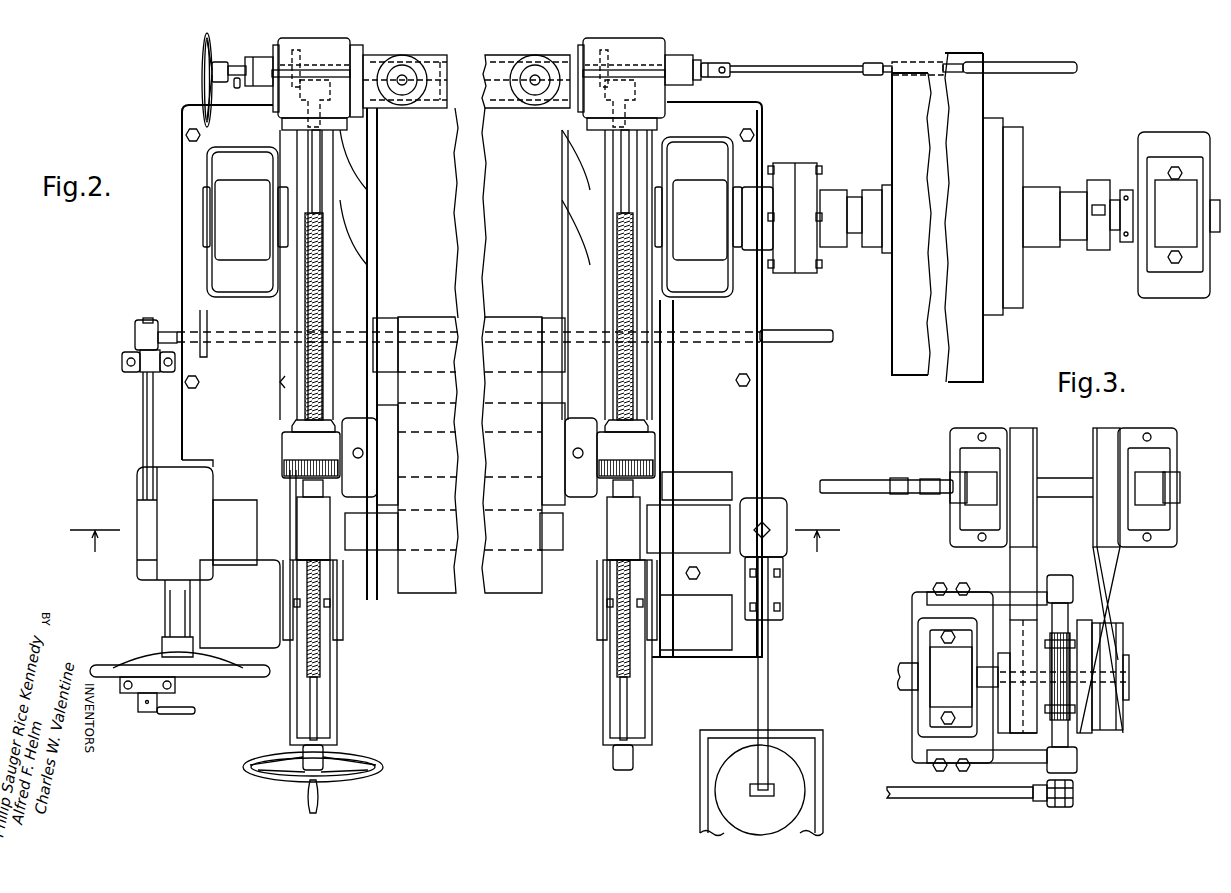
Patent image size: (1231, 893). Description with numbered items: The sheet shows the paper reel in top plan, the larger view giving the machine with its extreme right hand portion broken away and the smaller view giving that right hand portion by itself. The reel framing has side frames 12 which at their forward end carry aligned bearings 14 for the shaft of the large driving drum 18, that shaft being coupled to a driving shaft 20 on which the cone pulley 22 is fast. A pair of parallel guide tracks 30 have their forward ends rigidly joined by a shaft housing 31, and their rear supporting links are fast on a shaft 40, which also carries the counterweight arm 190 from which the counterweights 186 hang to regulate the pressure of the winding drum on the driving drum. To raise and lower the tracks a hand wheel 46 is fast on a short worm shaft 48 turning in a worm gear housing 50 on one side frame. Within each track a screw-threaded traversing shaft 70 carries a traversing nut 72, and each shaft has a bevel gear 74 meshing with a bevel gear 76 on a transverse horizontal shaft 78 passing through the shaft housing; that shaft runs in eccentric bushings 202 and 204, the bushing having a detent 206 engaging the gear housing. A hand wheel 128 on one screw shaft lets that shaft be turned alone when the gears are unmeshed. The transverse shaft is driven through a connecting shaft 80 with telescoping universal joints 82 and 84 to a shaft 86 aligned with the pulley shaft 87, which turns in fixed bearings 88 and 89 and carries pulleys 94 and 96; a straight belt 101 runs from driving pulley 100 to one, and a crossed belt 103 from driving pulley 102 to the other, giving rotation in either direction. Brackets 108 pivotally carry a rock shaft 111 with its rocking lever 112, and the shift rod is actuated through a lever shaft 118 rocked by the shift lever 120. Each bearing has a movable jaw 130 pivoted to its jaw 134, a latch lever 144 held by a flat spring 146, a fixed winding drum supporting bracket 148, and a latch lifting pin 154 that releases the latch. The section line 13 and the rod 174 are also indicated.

In FIG. 2, the side frames 12 is at (718, 420).
In FIG. 2, the section line 13 is at (455, 557).
In FIG. 2, the aligned bearings 14 is at (225, 195).
In FIG. 2, the driving drum 18 is at (800, 168).
In FIG. 3, the driving drum 18 is at (905, 667).
In FIG. 2, the driving shaft 20 is at (848, 205).
In FIG. 2, the cone pulley 22 is at (975, 102).
In FIG. 2, the parallel guide tracks 30 is at (335, 235).
In FIG. 2, the shaft housing 31 is at (428, 55).
In FIG. 2, the shaft 40 is at (538, 575).
In FIG. 2, the hand wheel 46 is at (213, 676).
In FIG. 2, the worm shaft 48 is at (178, 627).
In FIG. 2, the worm gear housing 50 is at (170, 493).
In FIG. 2, the screw-threaded traversing shafts 70 is at (315, 157).
In FIG. 2, the traversing nut 72 is at (220, 420).
In FIG. 2, the bevel gear 74 is at (305, 103).
In FIG. 2, the bevel gear 76 is at (300, 57).
In FIG. 2, the horizontal shaft 78 is at (476, 60).
In FIG. 2, the connecting shaft 80 is at (800, 66).
In FIG. 2, the telescoping universal joint 82 is at (718, 66).
In FIG. 2, the telescoping universal joint 84 is at (880, 63).
In FIG. 2, the shaft 86 is at (1025, 62).
In FIG. 3, the shaft 86 is at (852, 481).
In FIG. 3, the pulley shaft 87 is at (1078, 487).
In FIG. 3, the fixed bearing 88 is at (980, 492).
In FIG. 3, the fixed bearing 89 is at (1150, 480).
In FIG. 3, the belt-driven pulley 94 is at (1038, 447).
In FIG. 3, the belt-driven pulley 96 is at (1093, 522).
In FIG. 3, the driving pulley 100 is at (1048, 718).
In FIG. 3, the straight belt 101 is at (1025, 567).
In FIG. 3, the driving pulley 102 is at (1123, 628).
In FIG. 3, the crossed belt 103 is at (1105, 590).
In FIG. 3, the brackets 108 is at (992, 590).
In FIG. 3, the rock shaft 111 is at (1068, 617).
In FIG. 3, the rocking lever 112 is at (1075, 794).
In FIG. 2, the lever shaft 118 is at (147, 402).
In FIG. 2, the shift lever 120 is at (196, 710).
In FIG. 2, the hand wheel 128 is at (350, 753).
In FIG. 2, the movable jaw 130 is at (292, 485).
In FIG. 2, the bearing jaw 134 is at (295, 425).
In FIG. 2, the latch lever 144 is at (335, 536).
In FIG. 2, the flat spring 146 is at (360, 493).
In FIG. 2, the winding drum supporting bracket 148 is at (300, 620).
In FIG. 2, the latch lifting pin 154 is at (330, 598).
In FIG. 2, the rod 174 is at (820, 343).
In FIG. 3, the rod 174 is at (905, 790).
In FIG. 2, the counterweights 186 is at (787, 768).
In FIG. 2, the counterweight arm 190 is at (770, 670).
In FIG. 2, the eccentric bushing 202 is at (250, 58).
In FIG. 2, the eccentric bushing 204 is at (688, 58).
In FIG. 2, the detent 206 is at (232, 85).